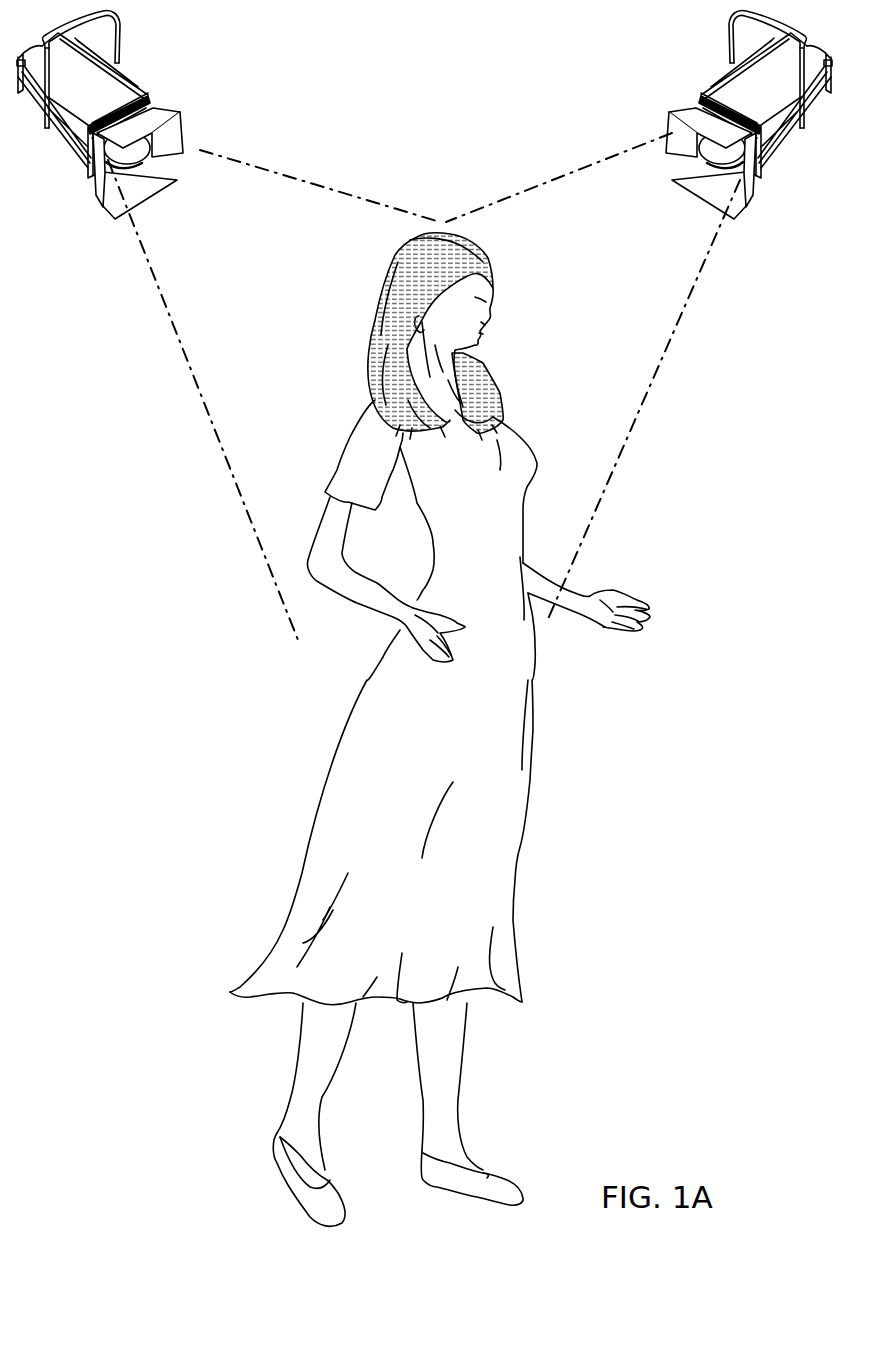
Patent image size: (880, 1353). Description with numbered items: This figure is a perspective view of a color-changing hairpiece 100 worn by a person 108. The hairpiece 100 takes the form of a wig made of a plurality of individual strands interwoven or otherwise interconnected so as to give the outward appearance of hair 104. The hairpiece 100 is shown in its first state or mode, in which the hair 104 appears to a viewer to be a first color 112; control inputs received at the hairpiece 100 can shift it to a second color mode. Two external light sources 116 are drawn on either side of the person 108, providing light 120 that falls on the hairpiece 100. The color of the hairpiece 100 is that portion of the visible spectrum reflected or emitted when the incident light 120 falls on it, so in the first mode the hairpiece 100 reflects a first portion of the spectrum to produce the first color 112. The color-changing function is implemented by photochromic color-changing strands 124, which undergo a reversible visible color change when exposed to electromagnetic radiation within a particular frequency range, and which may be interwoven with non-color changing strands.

The hairpiece 100 is at (330, 283).
The hair 104 is at (488, 363).
The person 108 is at (496, 840).
The first color 112 is at (443, 250).
The external light source 116 is at (112, 90).
The light 120 is at (175, 328).
The color-changing strands 124 is at (364, 375).